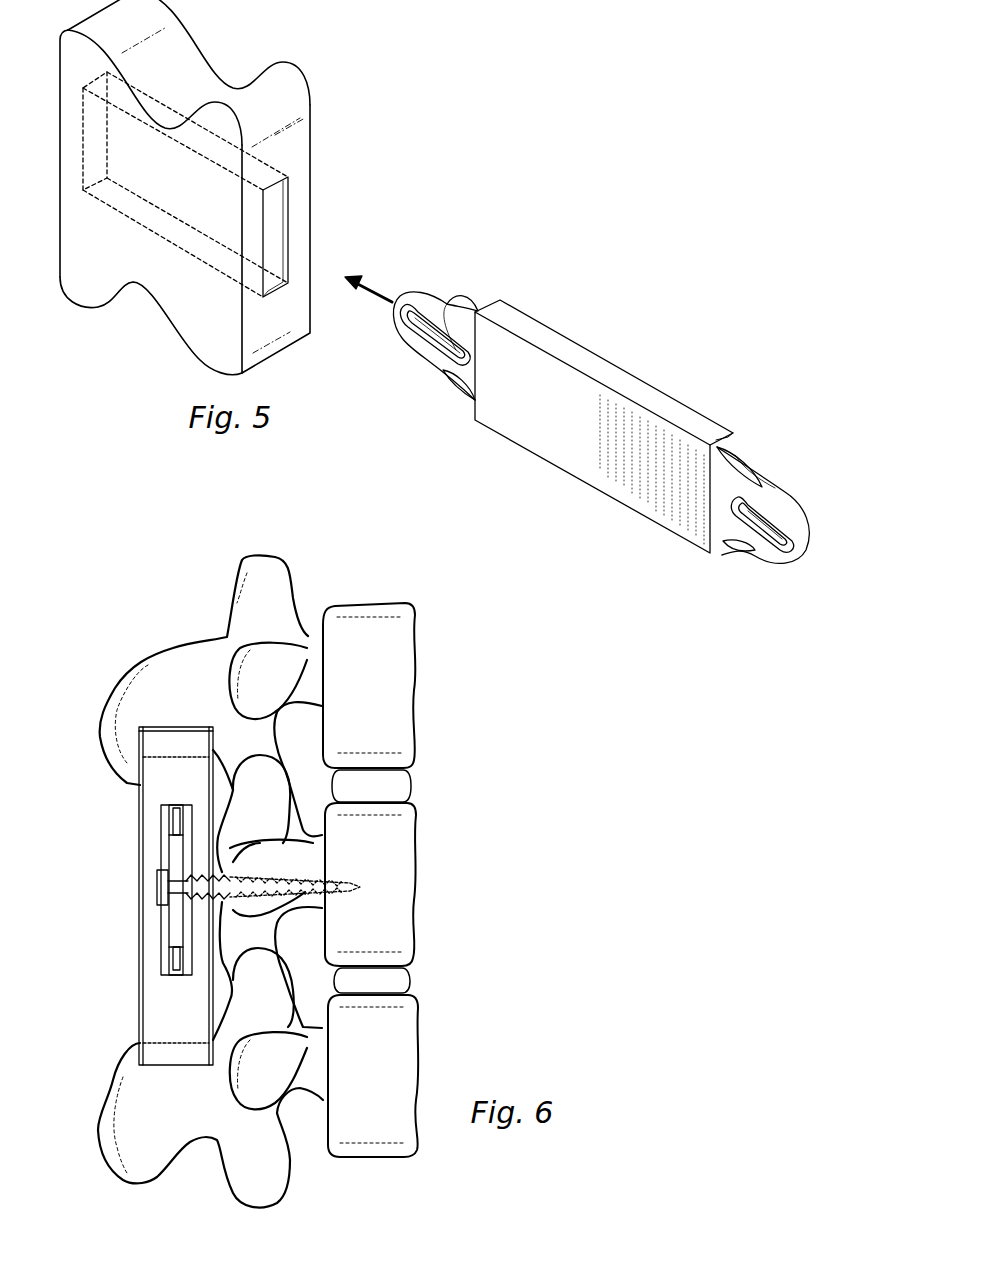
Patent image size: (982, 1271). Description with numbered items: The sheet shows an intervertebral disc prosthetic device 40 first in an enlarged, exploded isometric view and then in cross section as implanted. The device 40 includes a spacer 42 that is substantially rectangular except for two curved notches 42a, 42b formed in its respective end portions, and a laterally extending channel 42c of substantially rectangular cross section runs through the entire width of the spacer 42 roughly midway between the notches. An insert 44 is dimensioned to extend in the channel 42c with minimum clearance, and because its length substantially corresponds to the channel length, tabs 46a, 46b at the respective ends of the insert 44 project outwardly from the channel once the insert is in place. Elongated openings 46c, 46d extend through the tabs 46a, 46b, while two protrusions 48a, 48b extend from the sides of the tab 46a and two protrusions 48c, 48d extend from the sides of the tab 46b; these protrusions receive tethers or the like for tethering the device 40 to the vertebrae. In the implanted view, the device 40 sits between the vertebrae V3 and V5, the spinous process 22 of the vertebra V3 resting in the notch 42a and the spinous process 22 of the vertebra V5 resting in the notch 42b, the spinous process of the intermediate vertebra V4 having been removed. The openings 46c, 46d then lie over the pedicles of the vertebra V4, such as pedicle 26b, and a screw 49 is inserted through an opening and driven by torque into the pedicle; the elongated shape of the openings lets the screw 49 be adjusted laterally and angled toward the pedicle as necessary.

In FIG. 5, the intervertebral disc prosthetic device 40 is at (343, 122).
In FIG. 6, the intervertebral disc prosthetic device 40 is at (141, 937).
In FIG. 5, the spacer 42 is at (285, 65).
In FIG. 5, the curved notch 42a is at (178, 33).
In FIG. 5, the curved notch 42b is at (130, 290).
In FIG. 5, the laterally extending channel 42c is at (277, 202).
In FIG. 5, the insert 44 is at (640, 378).
In FIG. 5, the tab 46a is at (393, 317).
In FIG. 5, the tab 46b is at (810, 533).
In FIG. 5, the elongated opening 46c is at (430, 340).
In FIG. 5, the elongated opening 46d is at (765, 513).
In FIG. 5, the protrusion 48a is at (472, 297).
In FIG. 5, the protrusion 48b is at (443, 377).
In FIG. 5, the protrusion 48c is at (753, 464).
In FIG. 5, the protrusion 48d is at (743, 553).
In FIG. 6, the screw 49 is at (264, 865).
In FIG. 6, the spinous process 22 is at (168, 701).
In FIG. 6, the pedicle 26b is at (308, 634).
In FIG. 6, the vertebra V3 is at (228, 608).
In FIG. 6, the vertebra V4 is at (370, 898).
In FIG. 6, the vertebra V5 is at (228, 1189).